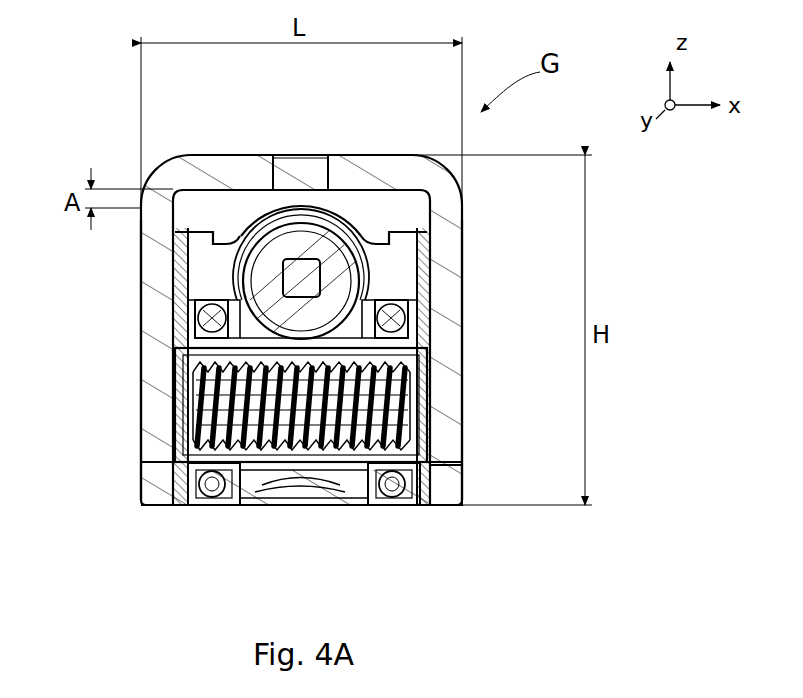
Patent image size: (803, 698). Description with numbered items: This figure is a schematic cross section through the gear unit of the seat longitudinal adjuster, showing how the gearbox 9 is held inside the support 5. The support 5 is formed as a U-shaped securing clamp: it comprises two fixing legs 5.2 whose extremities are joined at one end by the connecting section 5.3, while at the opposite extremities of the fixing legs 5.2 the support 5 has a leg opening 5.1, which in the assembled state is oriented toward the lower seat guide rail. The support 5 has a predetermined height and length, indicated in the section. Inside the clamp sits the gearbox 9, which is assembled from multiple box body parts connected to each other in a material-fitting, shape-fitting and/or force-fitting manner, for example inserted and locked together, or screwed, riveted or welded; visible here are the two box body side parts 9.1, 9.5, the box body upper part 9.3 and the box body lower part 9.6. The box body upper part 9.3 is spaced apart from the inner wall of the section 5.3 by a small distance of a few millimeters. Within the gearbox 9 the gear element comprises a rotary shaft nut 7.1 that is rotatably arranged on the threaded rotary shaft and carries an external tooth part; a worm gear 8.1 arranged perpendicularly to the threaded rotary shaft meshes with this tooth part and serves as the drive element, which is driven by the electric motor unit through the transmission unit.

The support 5 is at (135, 165).
The leg opening 5.1 is at (349, 510).
The fixing legs 5.2 is at (141, 318).
The section 5.3 is at (368, 154).
The rotary shaft nut 7.1 is at (318, 494).
The worm gear 8.1 is at (300, 232).
The gearbox 9 is at (301, 355).
The box body side part 9.1 is at (141, 484).
The box body upper part 9.3 is at (265, 230).
The box body side part 9.5 is at (447, 500).
The box body lower part 9.6 is at (247, 504).